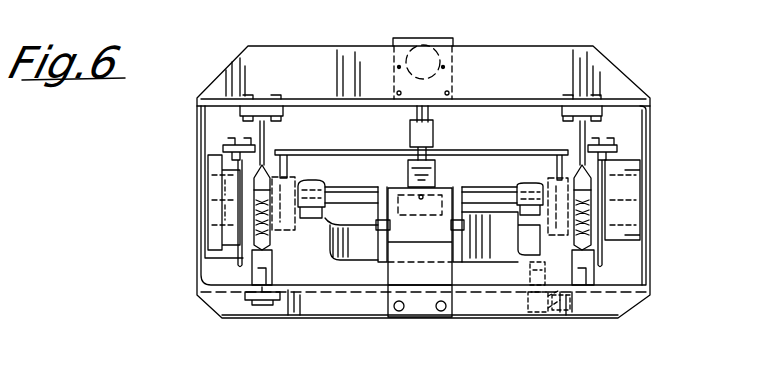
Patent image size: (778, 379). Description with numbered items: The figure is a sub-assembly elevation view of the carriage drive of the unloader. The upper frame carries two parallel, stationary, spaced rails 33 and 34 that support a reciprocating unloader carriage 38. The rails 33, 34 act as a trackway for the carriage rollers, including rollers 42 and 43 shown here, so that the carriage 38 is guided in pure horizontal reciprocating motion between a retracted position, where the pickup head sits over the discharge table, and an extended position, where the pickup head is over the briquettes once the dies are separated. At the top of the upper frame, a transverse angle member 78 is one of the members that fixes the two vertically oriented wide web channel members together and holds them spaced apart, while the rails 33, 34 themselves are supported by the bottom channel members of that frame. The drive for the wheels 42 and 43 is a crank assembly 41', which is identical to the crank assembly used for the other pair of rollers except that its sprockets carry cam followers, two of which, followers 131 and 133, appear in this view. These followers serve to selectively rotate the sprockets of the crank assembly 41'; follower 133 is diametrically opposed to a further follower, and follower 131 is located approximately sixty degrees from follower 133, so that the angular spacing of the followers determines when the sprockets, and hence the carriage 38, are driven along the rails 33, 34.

The top transverse angle member 78 is at (320, 68).
The roller 42 is at (262, 188).
The cam follower 131 is at (217, 197).
The cam follower 133 is at (192, 222).
The crank assembly 41' is at (298, 266).
The unloader carriage 38 is at (490, 267).
The rail 34 is at (585, 258).
The roller 43 is at (602, 197).
The rail 33 is at (262, 257).